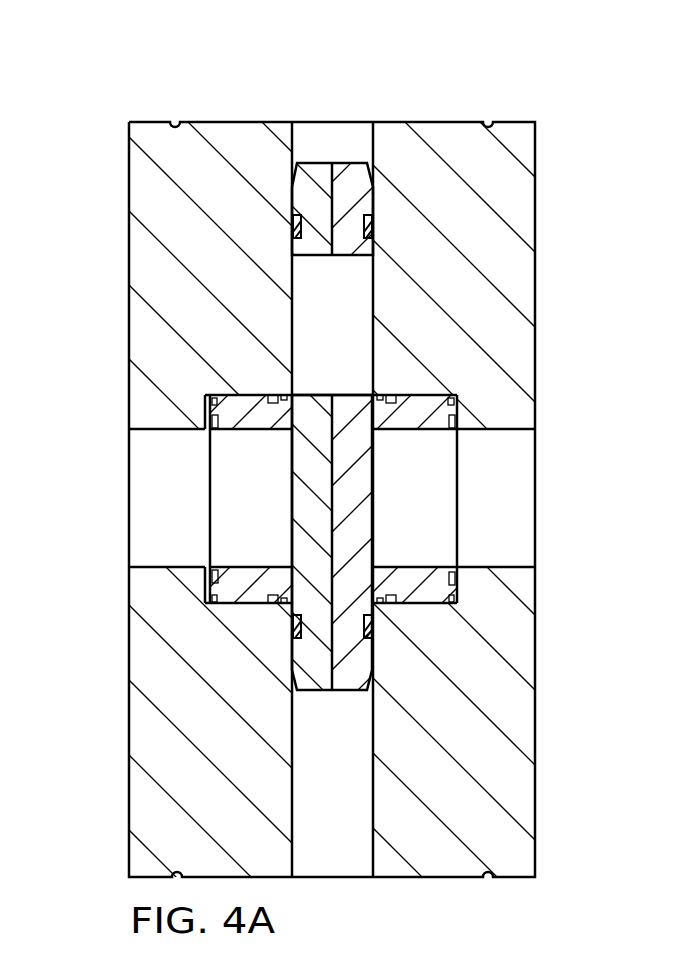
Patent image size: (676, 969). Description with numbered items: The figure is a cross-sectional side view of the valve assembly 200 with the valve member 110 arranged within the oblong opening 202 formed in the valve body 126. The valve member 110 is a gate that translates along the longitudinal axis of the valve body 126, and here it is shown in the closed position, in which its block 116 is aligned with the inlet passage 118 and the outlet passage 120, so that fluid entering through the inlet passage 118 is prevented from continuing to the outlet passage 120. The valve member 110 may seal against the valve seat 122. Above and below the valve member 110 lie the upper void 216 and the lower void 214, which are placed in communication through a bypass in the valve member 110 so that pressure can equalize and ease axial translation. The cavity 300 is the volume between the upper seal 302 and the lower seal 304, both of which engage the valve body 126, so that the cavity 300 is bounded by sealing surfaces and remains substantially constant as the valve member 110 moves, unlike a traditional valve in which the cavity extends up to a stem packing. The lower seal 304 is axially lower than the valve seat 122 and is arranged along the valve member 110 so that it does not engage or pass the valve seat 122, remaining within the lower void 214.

The valve assembly 200 is at (462, 79).
The valve member 110 is at (317, 172).
The upper void 216 is at (350, 130).
The upper seal 302 is at (374, 231).
The oblong opening 202 is at (291, 312).
The cavity 300 is at (377, 350).
The inlet passage 118 is at (137, 500).
The block 116 is at (291, 500).
The valve seat 122 is at (402, 430).
The outlet passage 120 is at (527, 500).
The lower seal 304 is at (293, 627).
The valve body 126 is at (137, 724).
The lower void 214 is at (334, 868).